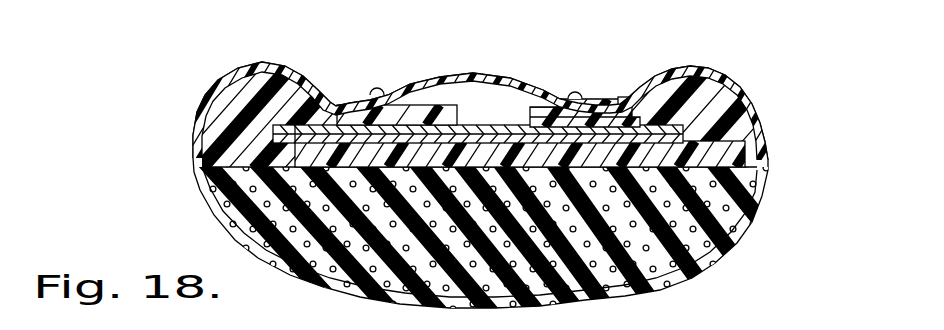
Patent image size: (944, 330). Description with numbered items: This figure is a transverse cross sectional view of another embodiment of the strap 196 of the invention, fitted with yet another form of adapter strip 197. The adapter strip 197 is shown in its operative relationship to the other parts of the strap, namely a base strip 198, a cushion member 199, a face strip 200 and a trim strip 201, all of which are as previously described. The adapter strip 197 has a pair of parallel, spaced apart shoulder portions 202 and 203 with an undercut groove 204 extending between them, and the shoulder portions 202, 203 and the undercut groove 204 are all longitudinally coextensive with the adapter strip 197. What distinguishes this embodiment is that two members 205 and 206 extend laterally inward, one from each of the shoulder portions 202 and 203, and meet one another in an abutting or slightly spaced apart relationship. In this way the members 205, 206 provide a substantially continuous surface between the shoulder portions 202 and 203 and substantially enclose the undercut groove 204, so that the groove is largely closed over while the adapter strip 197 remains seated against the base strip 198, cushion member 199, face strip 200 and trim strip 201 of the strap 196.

The strap 196 is at (527, 63).
The adapter strip 197 is at (738, 136).
The base strip 198 is at (750, 112).
The cushion member 199 is at (692, 236).
The face strip 200 is at (762, 194).
The trim strip 201 is at (517, 90).
The shoulder portion 202 is at (707, 93).
The shoulder portion 203 is at (246, 96).
The undercut groove 204 is at (288, 137).
The member 205 is at (352, 122).
The member 206 is at (590, 118).